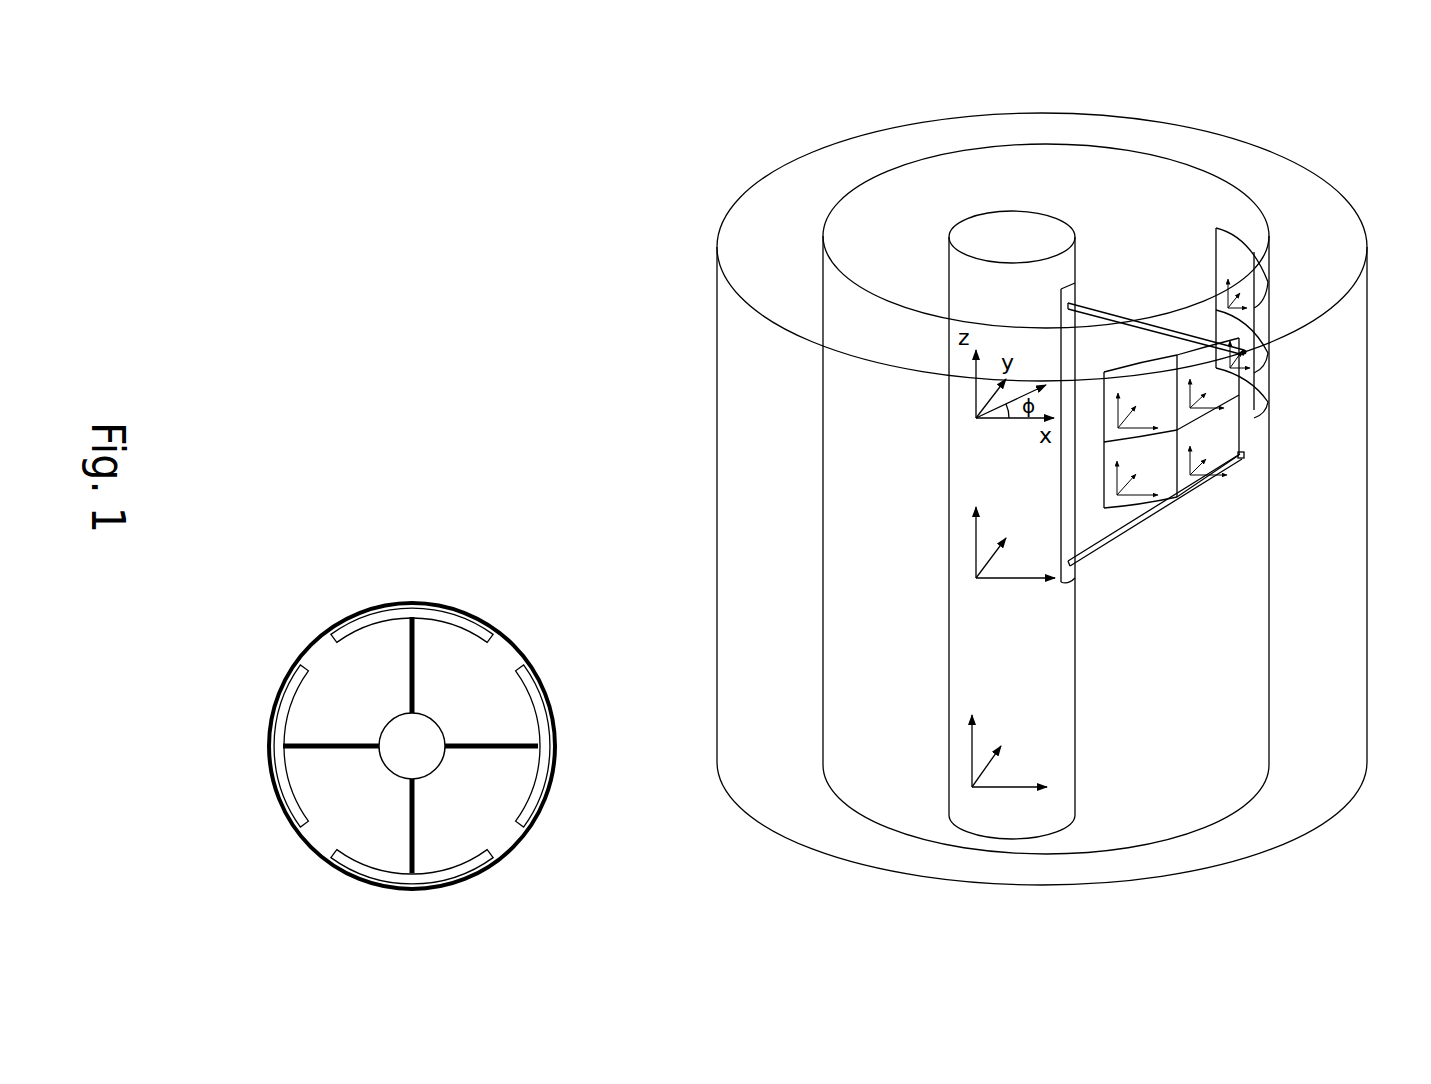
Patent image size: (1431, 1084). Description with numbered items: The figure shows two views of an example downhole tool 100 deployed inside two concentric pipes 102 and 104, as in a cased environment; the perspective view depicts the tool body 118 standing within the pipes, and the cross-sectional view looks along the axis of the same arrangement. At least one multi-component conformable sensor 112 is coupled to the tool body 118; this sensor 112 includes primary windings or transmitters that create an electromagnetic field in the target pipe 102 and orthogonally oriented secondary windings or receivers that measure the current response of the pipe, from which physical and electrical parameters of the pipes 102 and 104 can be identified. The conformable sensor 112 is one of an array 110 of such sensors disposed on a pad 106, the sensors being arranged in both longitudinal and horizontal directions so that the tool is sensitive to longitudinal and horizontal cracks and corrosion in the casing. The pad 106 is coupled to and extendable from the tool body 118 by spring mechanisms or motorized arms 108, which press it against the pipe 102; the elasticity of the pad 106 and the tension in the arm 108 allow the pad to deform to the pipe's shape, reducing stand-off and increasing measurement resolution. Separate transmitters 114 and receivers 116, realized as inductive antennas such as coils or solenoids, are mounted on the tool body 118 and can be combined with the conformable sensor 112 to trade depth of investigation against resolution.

The downhole tool 100 is at (947, 225).
The pipe 102 is at (1130, 147).
The pipe 104 is at (1223, 865).
The pad 106 is at (1247, 283).
The spring mechanisms or motorized arms 108 is at (412, 800).
The array of multi-component conformable sensors 110 is at (1290, 407).
The multi-component conformable sensor 112 is at (1135, 500).
The transmitter 114 is at (970, 532).
The receiver 116 is at (962, 755).
The tool body 118 is at (993, 212).